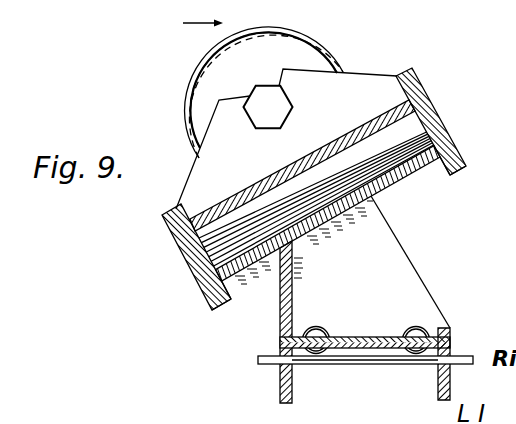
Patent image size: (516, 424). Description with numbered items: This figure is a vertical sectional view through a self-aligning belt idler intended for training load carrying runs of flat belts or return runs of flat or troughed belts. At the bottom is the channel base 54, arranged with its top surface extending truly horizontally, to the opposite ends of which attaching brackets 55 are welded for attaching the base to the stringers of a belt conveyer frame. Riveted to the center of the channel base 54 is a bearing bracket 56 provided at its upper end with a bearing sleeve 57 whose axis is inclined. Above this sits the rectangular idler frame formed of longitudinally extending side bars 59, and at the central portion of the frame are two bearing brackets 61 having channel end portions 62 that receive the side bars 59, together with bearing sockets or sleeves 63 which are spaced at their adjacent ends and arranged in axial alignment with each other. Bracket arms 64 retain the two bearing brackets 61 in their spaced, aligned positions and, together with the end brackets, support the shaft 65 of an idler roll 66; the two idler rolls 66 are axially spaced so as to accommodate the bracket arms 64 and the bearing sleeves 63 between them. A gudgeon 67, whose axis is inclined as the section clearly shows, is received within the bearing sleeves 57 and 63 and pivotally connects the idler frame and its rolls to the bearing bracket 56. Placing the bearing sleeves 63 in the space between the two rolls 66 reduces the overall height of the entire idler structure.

The channel base 54 is at (280, 378).
The attaching brackets 55 is at (468, 355).
The bearing bracket 56 is at (416, 298).
The bearing sleeve 57 is at (343, 214).
The side bars 59 is at (192, 273).
The bearing brackets 61 is at (233, 297).
The channel end portions 62 is at (215, 309).
The bearing sockets or sleeves 63 is at (209, 210).
The bracket arms 64 is at (190, 176).
The shaft 65 is at (285, 121).
The idler roll 66 is at (192, 73).
The gudgeon 67 is at (316, 199).